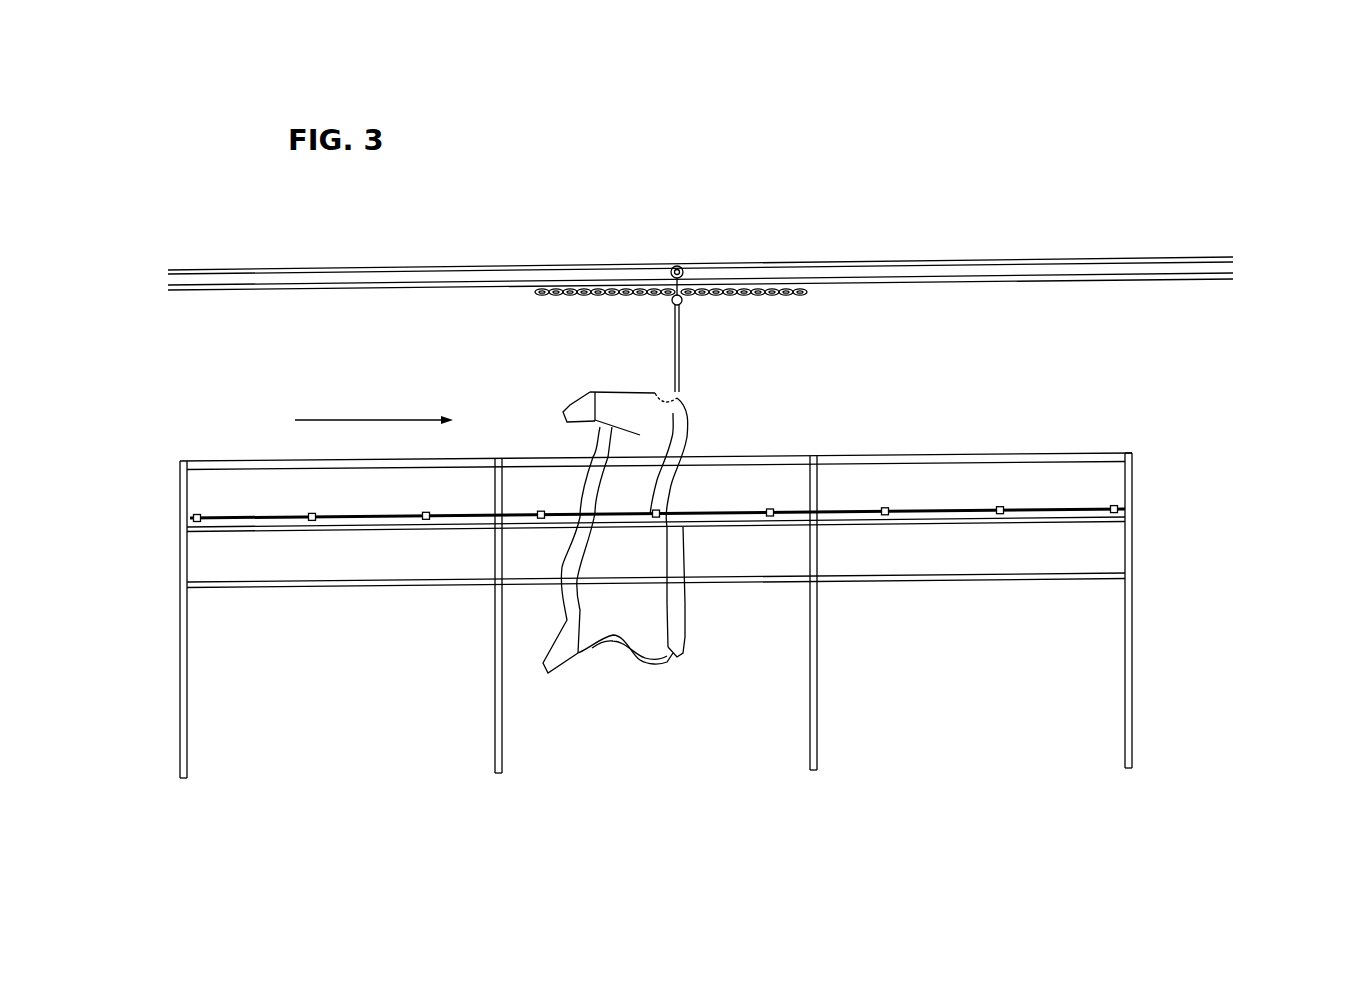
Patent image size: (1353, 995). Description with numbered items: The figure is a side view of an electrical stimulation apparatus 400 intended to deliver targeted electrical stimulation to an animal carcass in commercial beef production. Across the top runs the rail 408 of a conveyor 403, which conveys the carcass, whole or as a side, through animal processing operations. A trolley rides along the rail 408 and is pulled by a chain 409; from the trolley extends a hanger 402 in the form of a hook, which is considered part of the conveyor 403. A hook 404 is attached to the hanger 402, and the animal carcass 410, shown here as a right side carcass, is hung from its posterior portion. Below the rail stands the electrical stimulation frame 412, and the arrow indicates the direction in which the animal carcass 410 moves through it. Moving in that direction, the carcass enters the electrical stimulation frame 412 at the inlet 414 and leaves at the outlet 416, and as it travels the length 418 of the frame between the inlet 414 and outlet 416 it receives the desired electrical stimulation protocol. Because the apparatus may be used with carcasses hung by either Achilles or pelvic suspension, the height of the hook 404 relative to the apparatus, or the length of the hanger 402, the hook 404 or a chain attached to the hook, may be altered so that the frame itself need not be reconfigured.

The electrical stimulation apparatus 400 is at (1199, 118).
The hanger 402 is at (620, 300).
The conveyor 403 is at (1008, 240).
The hook 404 is at (682, 314).
The rail 408 is at (422, 277).
The chain 409 is at (813, 294).
The animal carcass 410 is at (655, 420).
The electrical stimulation frame 412 is at (925, 435).
The inlet 414 is at (206, 443).
The outlet 416 is at (1140, 433).
The length 418 is at (797, 420).